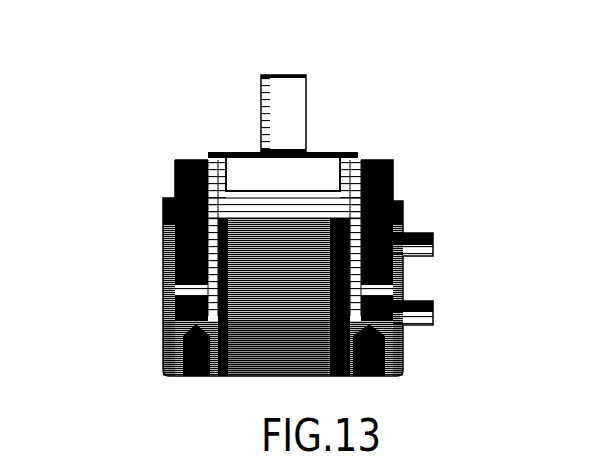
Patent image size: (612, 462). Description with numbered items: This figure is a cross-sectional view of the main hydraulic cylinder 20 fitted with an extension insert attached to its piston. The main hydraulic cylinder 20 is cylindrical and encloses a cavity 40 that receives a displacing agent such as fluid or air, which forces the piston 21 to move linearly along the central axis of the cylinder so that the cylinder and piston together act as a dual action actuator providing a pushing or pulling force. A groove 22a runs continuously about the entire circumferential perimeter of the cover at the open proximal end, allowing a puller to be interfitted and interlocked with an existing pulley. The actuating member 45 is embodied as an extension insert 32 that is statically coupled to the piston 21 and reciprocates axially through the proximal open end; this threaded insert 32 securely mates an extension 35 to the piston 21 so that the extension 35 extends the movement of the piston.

The main hydraulic cylinder 20 is at (116, 191).
The piston 21 is at (208, 178).
The groove 22a is at (173, 183).
The extension insert 32 is at (313, 167).
The extension 35 is at (288, 90).
The cavity 40 is at (310, 305).
The actuating member 45 is at (241, 131).